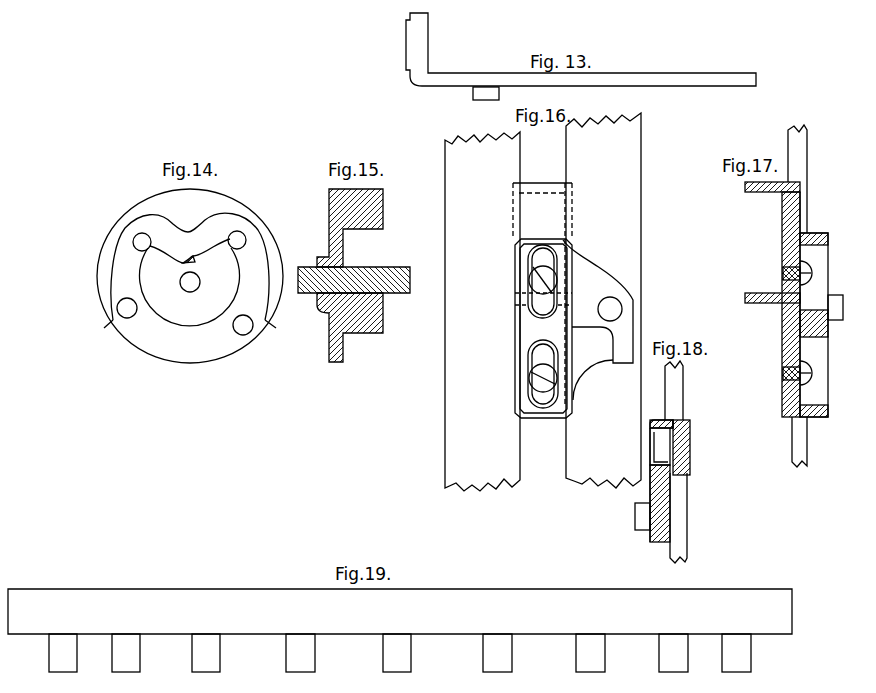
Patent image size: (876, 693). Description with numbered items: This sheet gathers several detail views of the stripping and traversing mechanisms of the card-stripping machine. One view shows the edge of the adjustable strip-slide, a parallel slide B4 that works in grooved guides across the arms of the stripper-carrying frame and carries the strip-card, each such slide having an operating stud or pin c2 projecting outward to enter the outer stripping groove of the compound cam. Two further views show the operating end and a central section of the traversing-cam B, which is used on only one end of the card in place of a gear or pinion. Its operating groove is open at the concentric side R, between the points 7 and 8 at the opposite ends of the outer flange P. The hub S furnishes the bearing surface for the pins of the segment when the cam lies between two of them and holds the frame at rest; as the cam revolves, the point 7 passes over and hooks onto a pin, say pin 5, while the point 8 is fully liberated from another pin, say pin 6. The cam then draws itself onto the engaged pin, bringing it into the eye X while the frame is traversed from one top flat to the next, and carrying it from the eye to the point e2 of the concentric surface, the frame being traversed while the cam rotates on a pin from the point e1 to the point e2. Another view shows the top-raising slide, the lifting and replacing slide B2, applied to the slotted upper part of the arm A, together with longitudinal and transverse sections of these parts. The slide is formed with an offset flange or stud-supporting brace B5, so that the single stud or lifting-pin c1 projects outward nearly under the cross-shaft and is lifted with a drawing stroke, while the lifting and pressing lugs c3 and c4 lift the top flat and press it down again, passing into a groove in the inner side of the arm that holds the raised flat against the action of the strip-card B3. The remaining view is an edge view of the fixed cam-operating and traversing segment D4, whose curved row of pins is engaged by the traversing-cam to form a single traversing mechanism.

In FIG. 13, the parallel slide B4 is at (581, 49).
In FIG. 13, the operating stud or pin c2 is at (486, 94).
In FIG. 18, the operating stud or pin c2 is at (642, 516).
In FIG. 14, the outer flange P is at (190, 276).
In FIG. 14, the concentric side R is at (190, 287).
In FIG. 14, the hub S is at (190, 287).
In FIG. 14, the eye X is at (190, 251).
In FIG. 14, the traversing-cam B is at (215, 239).
In FIG. 15, the traversing-cam B is at (354, 275).
In FIG. 17, the traversing-cam B is at (791, 304).
In FIG. 18, the traversing-cam B is at (670, 481).
In FIG. 14, the point e1 is at (142, 242).
In FIG. 14, the point e2 is at (237, 240).
In FIG. 14, the pin 5 is at (127, 308).
In FIG. 14, the pin 6 is at (243, 325).
In FIG. 14, the point 7 is at (112, 329).
In FIG. 14, the point 8 is at (270, 328).
In FIG. 16, the arm A is at (543, 302).
In FIG. 17, the arm A is at (797, 296).
In FIG. 18, the arm A is at (676, 462).
In FIG. 16, the lifting and replacing slide B2 is at (542, 300).
In FIG. 16, the offset-flange or stud-supporting brace B5 is at (598, 320).
In FIG. 16, the stud or lifting-pin c1 is at (610, 309).
In FIG. 17, the stud or lifting-pin c1 is at (835, 307).
In FIG. 17, the lifting and pressing lug c3 is at (766, 299).
In FIG. 17, the lifting and pressing lug c4 is at (762, 188).
In FIG. 17, the strip-card or strip-board B3 is at (805, 325).
In FIG. 19, the cam-operating and traversing segment D4 is at (400, 630).